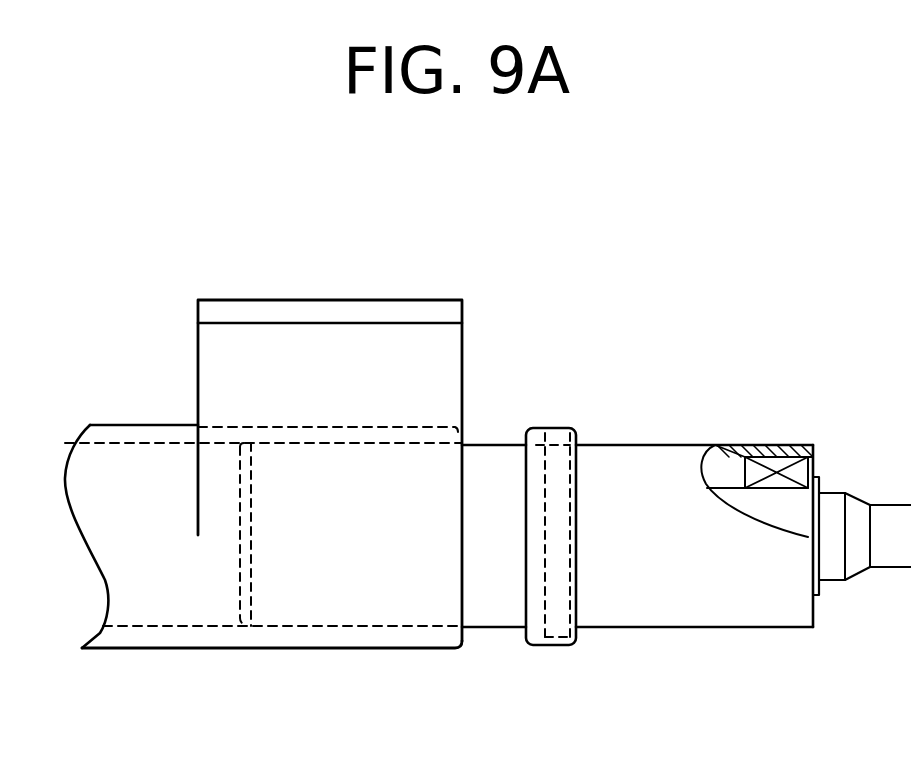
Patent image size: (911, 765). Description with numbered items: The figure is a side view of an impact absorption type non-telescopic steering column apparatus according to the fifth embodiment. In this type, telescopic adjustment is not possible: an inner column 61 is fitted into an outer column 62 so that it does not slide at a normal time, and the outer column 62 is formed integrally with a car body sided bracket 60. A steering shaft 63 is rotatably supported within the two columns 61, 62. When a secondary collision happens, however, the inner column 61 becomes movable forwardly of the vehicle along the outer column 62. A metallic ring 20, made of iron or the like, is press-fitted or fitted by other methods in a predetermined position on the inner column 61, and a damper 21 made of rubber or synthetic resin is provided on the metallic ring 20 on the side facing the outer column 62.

The metallic ring 20 is at (560, 430).
The damper 21 is at (536, 437).
The car body sided bracket 60 is at (312, 300).
The inner column 61 is at (671, 445).
The outer column 62 is at (139, 423).
The steering shaft 63 is at (860, 497).